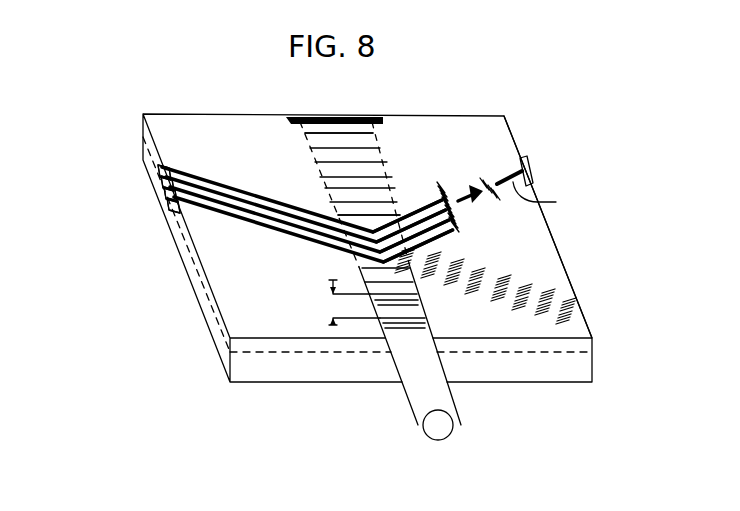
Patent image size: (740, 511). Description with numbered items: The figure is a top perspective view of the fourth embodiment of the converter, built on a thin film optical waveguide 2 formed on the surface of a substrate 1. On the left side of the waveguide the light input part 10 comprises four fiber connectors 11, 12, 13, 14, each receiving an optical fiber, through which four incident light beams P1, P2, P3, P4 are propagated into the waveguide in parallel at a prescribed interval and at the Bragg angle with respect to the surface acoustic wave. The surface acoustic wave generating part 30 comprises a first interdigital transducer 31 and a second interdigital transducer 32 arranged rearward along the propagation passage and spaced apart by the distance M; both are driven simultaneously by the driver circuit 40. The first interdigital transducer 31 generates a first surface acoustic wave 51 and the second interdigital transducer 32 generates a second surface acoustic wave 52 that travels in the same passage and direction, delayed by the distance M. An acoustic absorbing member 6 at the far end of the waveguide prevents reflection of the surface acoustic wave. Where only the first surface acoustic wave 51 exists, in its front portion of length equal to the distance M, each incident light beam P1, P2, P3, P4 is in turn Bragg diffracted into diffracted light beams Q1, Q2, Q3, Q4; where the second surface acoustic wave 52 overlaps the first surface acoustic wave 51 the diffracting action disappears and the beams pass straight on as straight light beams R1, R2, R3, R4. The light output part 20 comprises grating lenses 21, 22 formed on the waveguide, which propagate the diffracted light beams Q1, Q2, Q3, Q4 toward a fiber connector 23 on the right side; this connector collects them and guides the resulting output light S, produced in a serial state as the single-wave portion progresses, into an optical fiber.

The substrate 1 is at (272, 365).
The thin film optical waveguide 2 is at (294, 343).
The acoustic absorbing member 6 is at (305, 116).
The light input part 10 is at (158, 232).
The fiber connector 11 is at (168, 210).
The fiber connector 12 is at (165, 196).
The fiber connector 13 is at (162, 184).
The fiber connector 14 is at (158, 171).
The light output part 20 is at (500, 160).
The grating lens 21 is at (445, 181).
The grating lens 22 is at (486, 178).
The fiber connector 23 is at (536, 172).
The surface acoustic wave generating part 30 is at (373, 323).
The first interdigital transducer 31 is at (422, 302).
The second interdigital transducer 32 is at (432, 325).
The driver circuit 40 is at (436, 441).
The first surface acoustic wave 51 is at (366, 153).
The second surface acoustic wave 52 is at (352, 174).
The incident light beam P1 is at (266, 225).
The incident light beam P2 is at (246, 210).
The incident light beam P3 is at (227, 197).
The incident light beam P4 is at (207, 181).
The diffracted light beam Q1 is at (385, 261).
The diffracted light beam Q2 is at (381, 251).
The diffracted light beam Q3 is at (378, 241).
The diffracted light beam Q4 is at (375, 231).
The straight light beam R1 is at (474, 273).
The straight light beam R2 is at (496, 284).
The straight light beam R3 is at (516, 287).
The straight light beam R4 is at (527, 290).
The output light S is at (539, 197).
The distance M is at (350, 302).